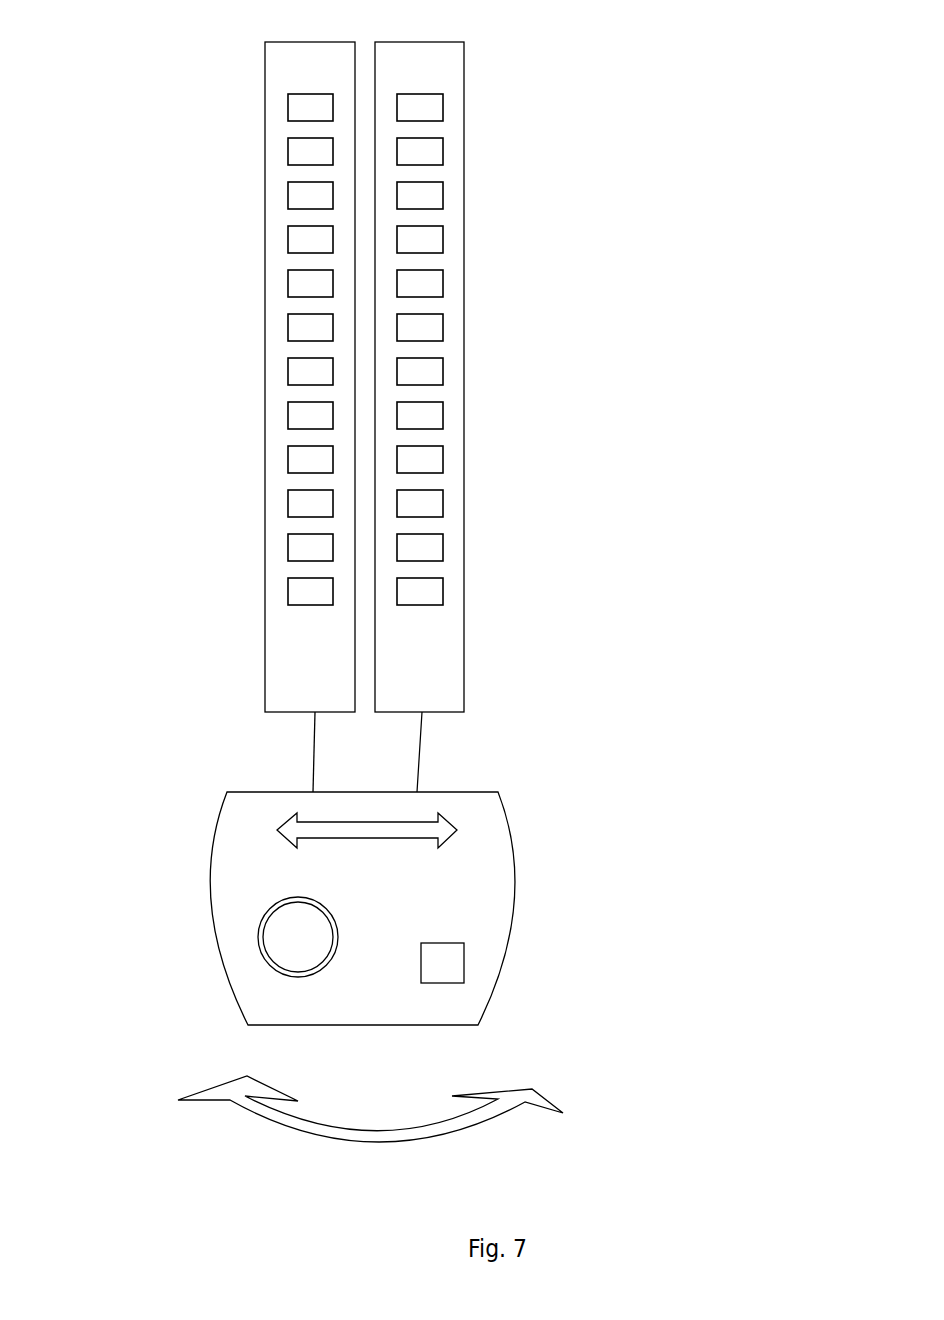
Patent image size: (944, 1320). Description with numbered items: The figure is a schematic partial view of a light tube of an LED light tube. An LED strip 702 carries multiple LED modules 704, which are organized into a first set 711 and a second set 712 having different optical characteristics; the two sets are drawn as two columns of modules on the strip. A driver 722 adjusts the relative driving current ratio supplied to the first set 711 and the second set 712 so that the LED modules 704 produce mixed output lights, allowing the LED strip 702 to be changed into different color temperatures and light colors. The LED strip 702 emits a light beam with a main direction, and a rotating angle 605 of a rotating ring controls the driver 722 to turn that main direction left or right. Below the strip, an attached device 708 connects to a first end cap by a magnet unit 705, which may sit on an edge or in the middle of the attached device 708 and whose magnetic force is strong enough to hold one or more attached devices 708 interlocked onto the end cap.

The LED strip 702 is at (457, 188).
The LED modules 704 is at (303, 388).
The first set 711 is at (312, 728).
The second set 712 is at (423, 728).
The attached device 708 is at (488, 840).
The rotating angle 605 is at (358, 837).
The magnet unit 705 is at (288, 938).
The driver 722 is at (438, 965).